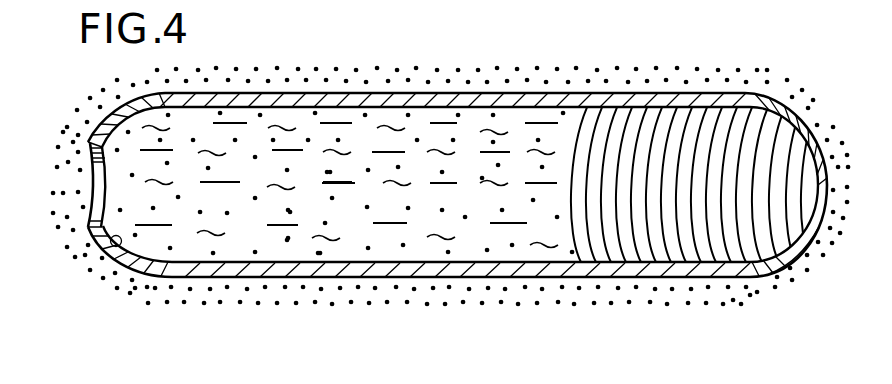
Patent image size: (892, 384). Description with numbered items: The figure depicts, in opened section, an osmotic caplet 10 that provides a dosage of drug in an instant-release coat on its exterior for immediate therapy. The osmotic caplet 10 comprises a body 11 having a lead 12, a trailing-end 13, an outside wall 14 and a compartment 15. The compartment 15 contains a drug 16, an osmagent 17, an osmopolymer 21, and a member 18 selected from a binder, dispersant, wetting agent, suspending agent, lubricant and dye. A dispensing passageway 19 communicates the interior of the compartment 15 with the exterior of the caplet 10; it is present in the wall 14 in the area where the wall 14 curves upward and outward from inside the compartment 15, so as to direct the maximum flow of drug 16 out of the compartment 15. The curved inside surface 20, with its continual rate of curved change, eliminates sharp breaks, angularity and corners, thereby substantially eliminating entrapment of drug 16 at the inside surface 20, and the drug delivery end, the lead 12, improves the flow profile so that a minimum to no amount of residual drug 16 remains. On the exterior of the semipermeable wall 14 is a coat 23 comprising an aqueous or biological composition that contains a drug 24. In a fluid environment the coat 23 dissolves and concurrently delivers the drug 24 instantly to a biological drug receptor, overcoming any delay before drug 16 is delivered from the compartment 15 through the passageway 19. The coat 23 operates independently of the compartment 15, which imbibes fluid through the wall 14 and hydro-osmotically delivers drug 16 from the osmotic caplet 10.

The osmotic caplet 10 is at (724, 49).
The body 11 is at (798, 110).
The lead 12 is at (92, 230).
The trailing-end 13 is at (837, 173).
The outside wall 14 is at (760, 277).
The compartment 15 is at (335, 250).
The drug 16 is at (448, 253).
The osmagent 17 is at (390, 240).
The member 18 is at (530, 243).
The dispensing passageway 19 is at (98, 182).
The inside surface 20 is at (117, 265).
The osmopolymer 21 is at (680, 223).
The coat 23 is at (218, 288).
The drug 24 is at (260, 303).